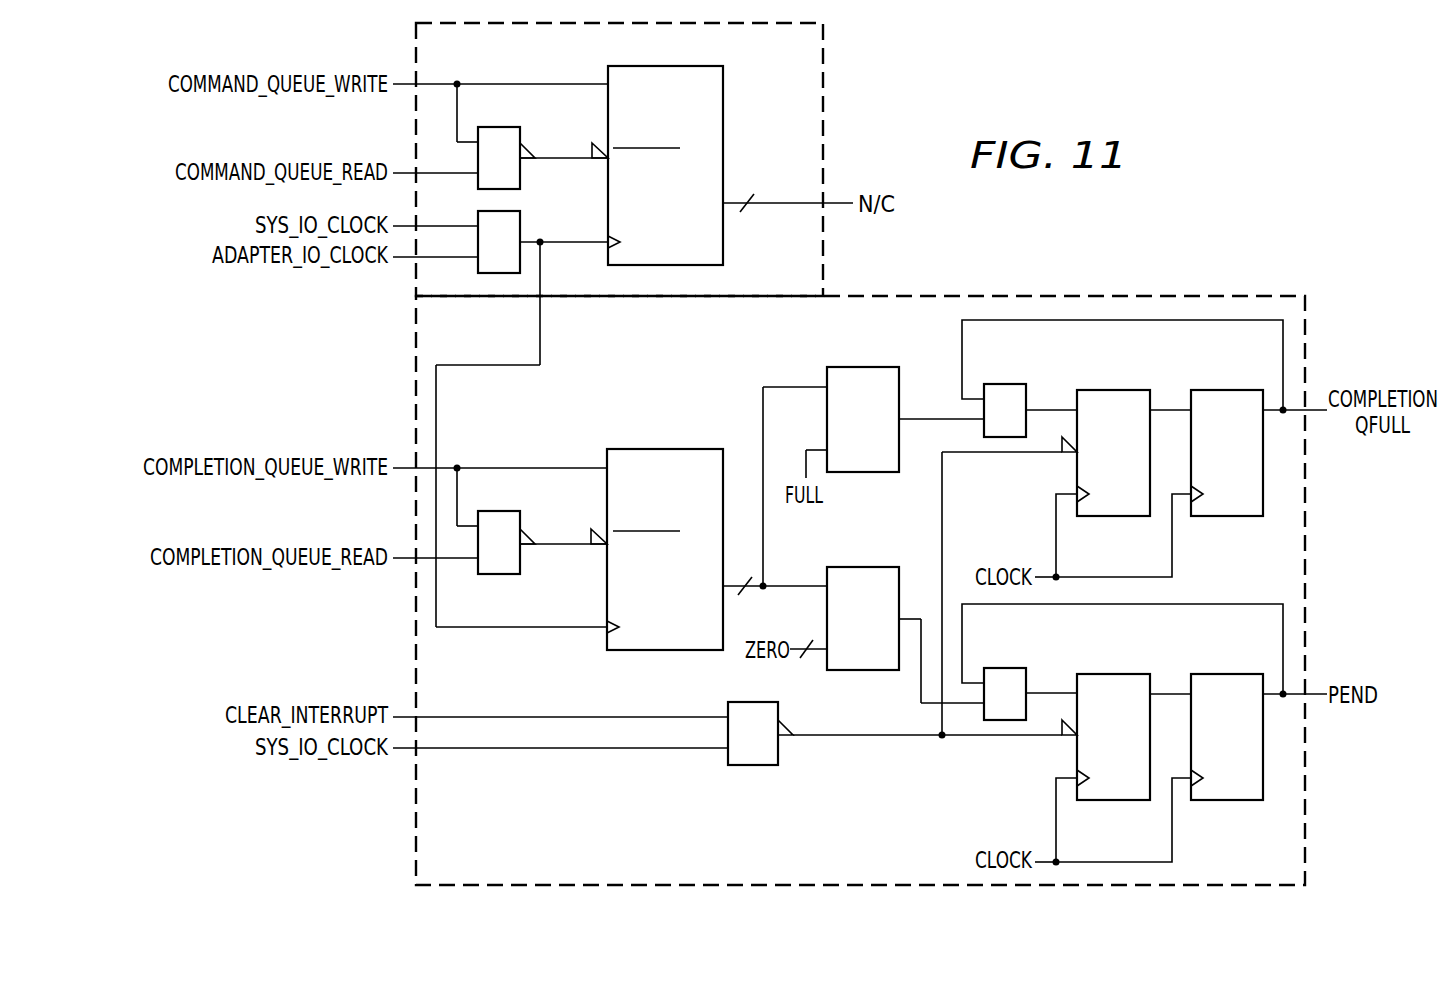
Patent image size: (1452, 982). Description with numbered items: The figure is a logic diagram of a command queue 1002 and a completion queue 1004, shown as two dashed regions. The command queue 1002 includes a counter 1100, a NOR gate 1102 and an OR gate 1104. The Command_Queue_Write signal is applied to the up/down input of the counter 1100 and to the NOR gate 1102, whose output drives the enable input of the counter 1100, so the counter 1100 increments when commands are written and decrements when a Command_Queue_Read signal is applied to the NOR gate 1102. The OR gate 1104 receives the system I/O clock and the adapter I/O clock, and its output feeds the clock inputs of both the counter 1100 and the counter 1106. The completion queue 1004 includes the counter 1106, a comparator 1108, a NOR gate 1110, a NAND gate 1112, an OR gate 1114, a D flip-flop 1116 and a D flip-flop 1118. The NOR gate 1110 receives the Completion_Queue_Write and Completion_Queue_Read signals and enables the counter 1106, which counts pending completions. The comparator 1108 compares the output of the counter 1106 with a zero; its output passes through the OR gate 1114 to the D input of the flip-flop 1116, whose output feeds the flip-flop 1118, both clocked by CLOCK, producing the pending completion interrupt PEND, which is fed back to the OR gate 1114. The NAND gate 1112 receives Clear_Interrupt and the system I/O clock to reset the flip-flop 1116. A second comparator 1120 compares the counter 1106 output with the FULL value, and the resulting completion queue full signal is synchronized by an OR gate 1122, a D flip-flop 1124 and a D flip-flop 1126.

The command queue 1002 is at (488, 60).
The completion queue 1004 is at (488, 861).
The counter 1100 is at (723, 121).
The NOR gate 1102 is at (520, 172).
The OR gate 1104 is at (521, 225).
The counter 1106 is at (665, 650).
The comparator 1108 is at (862, 670).
The NOR gate 1110 is at (520, 557).
The NAND gate 1112 is at (750, 765).
The OR gate 1114 is at (1003, 668).
The D flip-flop 1116 is at (1112, 800).
The D flip-flop 1118 is at (1226, 800).
The comparator 1120 is at (862, 472).
The OR gate 1122 is at (1003, 384).
The D flip-flop 1124 is at (1112, 516).
The D flip-flop 1126 is at (1226, 516).